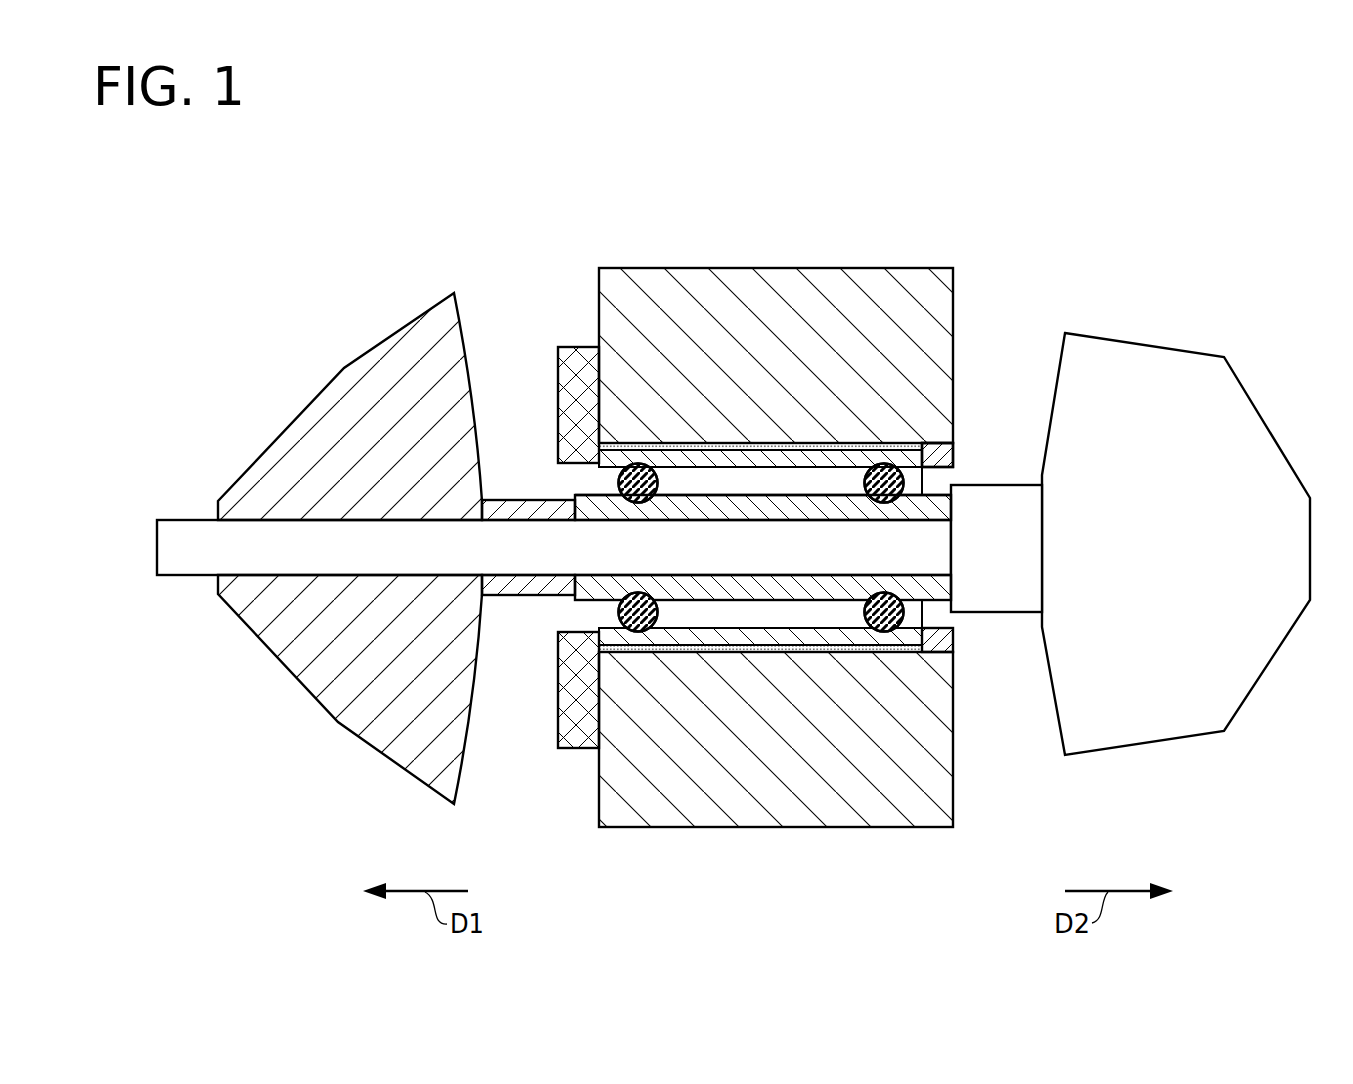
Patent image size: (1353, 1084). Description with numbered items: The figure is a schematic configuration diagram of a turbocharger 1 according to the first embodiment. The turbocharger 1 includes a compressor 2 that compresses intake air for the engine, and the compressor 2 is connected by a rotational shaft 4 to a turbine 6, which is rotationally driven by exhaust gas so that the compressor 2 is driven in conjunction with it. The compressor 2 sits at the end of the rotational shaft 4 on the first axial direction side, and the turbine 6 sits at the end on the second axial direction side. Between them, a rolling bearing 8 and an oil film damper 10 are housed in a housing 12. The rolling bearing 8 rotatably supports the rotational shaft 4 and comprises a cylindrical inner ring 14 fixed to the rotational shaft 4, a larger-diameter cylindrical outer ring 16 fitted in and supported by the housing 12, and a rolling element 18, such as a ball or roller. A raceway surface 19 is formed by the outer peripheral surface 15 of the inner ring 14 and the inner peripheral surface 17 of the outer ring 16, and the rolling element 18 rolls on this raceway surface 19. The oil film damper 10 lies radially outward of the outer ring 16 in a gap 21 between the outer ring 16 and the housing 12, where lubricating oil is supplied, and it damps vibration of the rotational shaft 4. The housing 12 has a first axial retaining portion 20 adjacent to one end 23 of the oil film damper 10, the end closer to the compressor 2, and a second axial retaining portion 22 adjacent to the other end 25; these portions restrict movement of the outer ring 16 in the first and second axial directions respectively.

The turbocharger 1 is at (1262, 155).
The compressor 2 is at (323, 392).
The rotational shaft 4 is at (195, 577).
The turbine 6 is at (1235, 371).
The rolling bearing 8 is at (850, 433).
The oil film damper 10 is at (920, 447).
The housing 12 is at (800, 267).
The inner ring 14 is at (575, 510).
The outer peripheral surface 15 is at (700, 494).
The outer ring 16 is at (598, 448).
The inner peripheral surface 17 is at (704, 473).
The rolling element 18 is at (618, 482).
The raceway surface 19 is at (588, 179).
The first axial retaining portion 20 is at (560, 346).
The gap 21 is at (739, 447).
The second axial retaining portion 22 is at (955, 457).
The one end 23 is at (598, 455).
The other end 25 is at (943, 458).